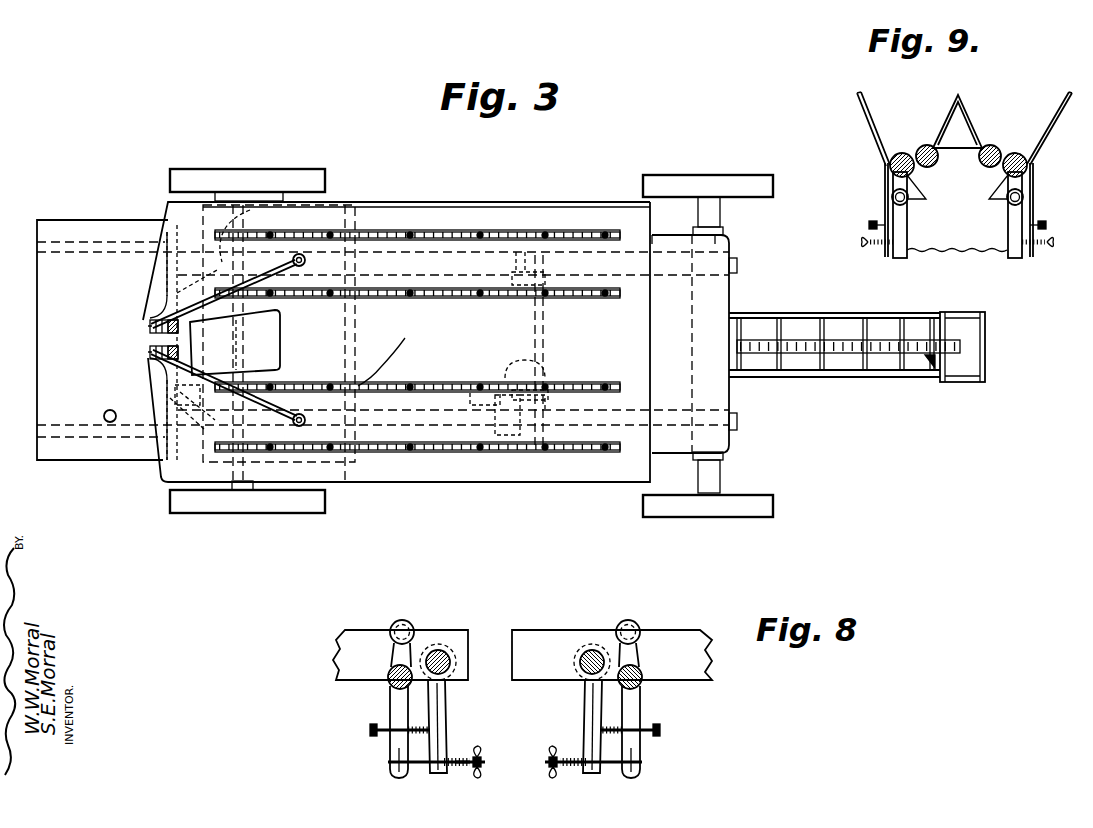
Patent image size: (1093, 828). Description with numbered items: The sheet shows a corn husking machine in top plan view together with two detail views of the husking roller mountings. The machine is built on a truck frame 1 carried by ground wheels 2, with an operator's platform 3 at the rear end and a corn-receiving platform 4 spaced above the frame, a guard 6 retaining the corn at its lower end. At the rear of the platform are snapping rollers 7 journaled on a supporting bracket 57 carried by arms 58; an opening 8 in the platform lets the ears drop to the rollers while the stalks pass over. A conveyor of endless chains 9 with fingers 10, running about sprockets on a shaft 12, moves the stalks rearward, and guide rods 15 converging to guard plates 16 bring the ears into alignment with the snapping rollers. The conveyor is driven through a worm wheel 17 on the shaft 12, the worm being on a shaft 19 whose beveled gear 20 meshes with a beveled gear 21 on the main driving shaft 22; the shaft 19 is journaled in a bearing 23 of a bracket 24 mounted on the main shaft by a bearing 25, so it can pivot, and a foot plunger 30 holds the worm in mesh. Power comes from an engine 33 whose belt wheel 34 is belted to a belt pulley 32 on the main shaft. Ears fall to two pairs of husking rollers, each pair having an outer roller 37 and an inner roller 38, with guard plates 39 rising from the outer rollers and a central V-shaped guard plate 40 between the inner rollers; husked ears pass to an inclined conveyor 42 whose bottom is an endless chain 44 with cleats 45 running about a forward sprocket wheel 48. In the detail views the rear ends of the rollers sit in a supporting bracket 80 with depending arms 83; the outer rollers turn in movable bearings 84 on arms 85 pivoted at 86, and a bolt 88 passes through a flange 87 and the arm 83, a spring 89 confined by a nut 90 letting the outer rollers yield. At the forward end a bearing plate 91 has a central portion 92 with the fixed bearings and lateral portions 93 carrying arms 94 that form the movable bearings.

In FIG. 3, the frame 1 is at (737, 423).
In FIG. 3, the ground wheels 2 is at (762, 512).
In FIG. 3, the operator's platform 3 is at (118, 452).
In FIG. 3, the platform 4 is at (490, 483).
In FIG. 3, the guard 6 is at (717, 246).
In FIG. 3, the snapping rollers 7 is at (174, 337).
In FIG. 3, the opening 8 is at (280, 333).
In FIG. 3, the endless chains 9 is at (445, 298).
In FIG. 3, the fingers 10 is at (391, 356).
In FIG. 3, the shaft 12 is at (241, 352).
In FIG. 3, the rods 15 is at (230, 328).
In FIG. 3, the guard plates 16 is at (146, 361).
In FIG. 3, the worm wheel 17 is at (174, 392).
In FIG. 3, the shaft 19 is at (480, 383).
In FIG. 3, the beveled gear 20 is at (528, 451).
In FIG. 3, the beveled gear 21 is at (560, 386).
In FIG. 3, the shaft 22 is at (545, 331).
In FIG. 3, the bearing 23 is at (497, 407).
In FIG. 3, the bracket 24 is at (512, 375).
In FIG. 3, the bearing 25 is at (548, 375).
In FIG. 3, the plunger 30 is at (111, 409).
In FIG. 3, the belt pulley 32 is at (568, 278).
In FIG. 3, the engine 33 is at (318, 211).
In FIG. 3, the belt wheel 34 is at (213, 262).
In FIG. 9, the husking roller 37 is at (887, 168).
In FIG. 8, the husking roller 37 is at (388, 680).
In FIG. 8, the husking roller 38 is at (585, 658).
In FIG. 9, the guard plates 39 is at (860, 121).
In FIG. 9, the central V-shaped guard plate 40 is at (968, 121).
In FIG. 3, the conveyor 42 is at (832, 316).
In FIG. 3, the endless chain 44 is at (832, 350).
In FIG. 3, the cleats 45 is at (928, 360).
In FIG. 3, the sprocket wheel 48 is at (955, 358).
In FIG. 3, the supporting frame or bracket 57 is at (168, 296).
In FIG. 3, the arms 58 is at (197, 418).
In FIG. 8, the supporting bracket 80 is at (450, 648).
In FIG. 8, the depending arms 83 is at (445, 726).
In FIG. 8, the movable bearings 84 is at (394, 692).
In FIG. 8, the arms 85 is at (393, 729).
In FIG. 8, the pivot 86 is at (411, 622).
In FIG. 8, the flanges 87 is at (393, 752).
In FIG. 8, the bolt 88 is at (427, 766).
In FIG. 8, the spring 89 is at (560, 767).
In FIG. 8, the nut 90 is at (553, 757).
In FIG. 9, the bearing plate 91 is at (981, 251).
In FIG. 9, the central portion 92 is at (962, 153).
In FIG. 9, the upwardly extending portions 93 is at (892, 197).
In FIG. 9, the arms 94 is at (900, 221).